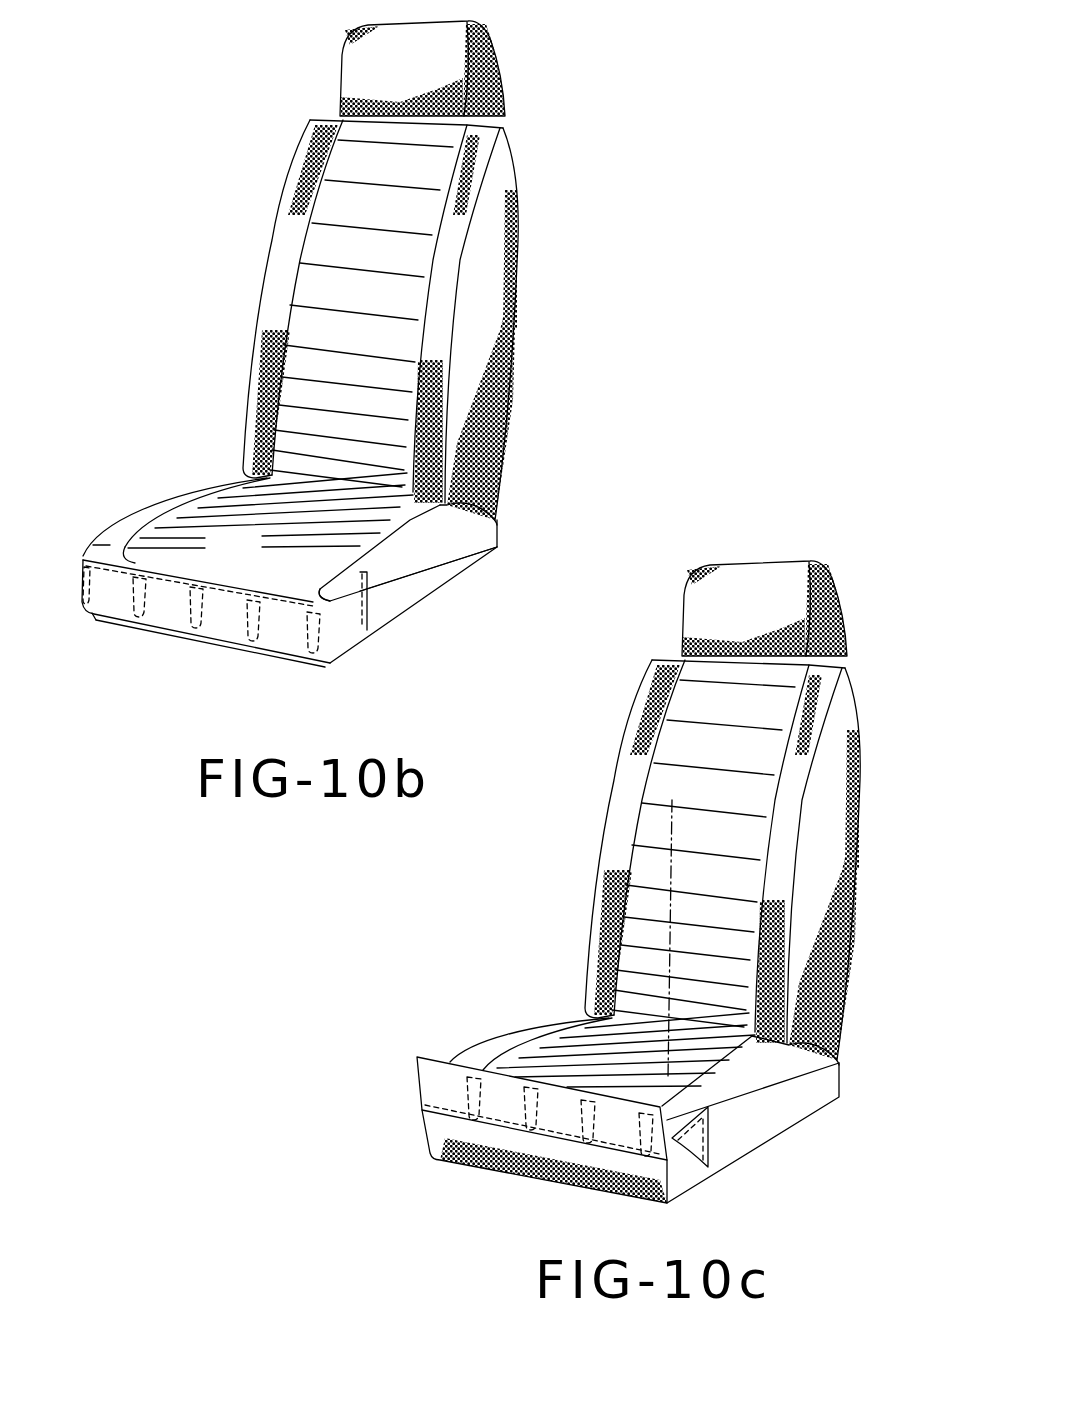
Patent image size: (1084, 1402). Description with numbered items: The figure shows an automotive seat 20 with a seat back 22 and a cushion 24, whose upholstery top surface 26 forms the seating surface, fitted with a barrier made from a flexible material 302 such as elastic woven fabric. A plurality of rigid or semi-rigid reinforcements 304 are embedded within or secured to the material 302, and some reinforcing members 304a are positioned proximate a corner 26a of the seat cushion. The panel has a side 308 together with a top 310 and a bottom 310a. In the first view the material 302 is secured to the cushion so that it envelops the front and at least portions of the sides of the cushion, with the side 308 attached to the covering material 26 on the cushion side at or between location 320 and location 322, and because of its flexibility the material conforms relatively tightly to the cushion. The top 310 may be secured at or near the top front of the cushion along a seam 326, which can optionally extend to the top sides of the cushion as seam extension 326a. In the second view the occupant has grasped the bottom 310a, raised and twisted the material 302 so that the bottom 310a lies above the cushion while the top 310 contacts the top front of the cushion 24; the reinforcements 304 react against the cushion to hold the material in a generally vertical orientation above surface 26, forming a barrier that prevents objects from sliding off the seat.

In FIG. 10B, the automotive seat 20 is at (252, 180).
In FIG. 10C, the automotive seat 20 is at (648, 622).
In FIG. 10B, the seat back 22 is at (320, 296).
In FIG. 10C, the seat back 22 is at (660, 826).
In FIG. 10B, the cushion 24 is at (168, 482).
In FIG. 10C, the cushion 24 is at (512, 1024).
In FIG. 10B, the top surface 26 is at (205, 514).
In FIG. 10C, the top surface 26 is at (545, 1052).
In FIG. 10B, the corner 26a is at (88, 556).
In FIG. 10B, the flexible material 302 is at (145, 562).
In FIG. 10C, the flexible material 302 is at (455, 1050).
In FIG. 10B, the reinforcements 304 is at (140, 622).
In FIG. 10C, the reinforcements 304 is at (468, 1110).
In FIG. 10B, the reinforcing members 304a is at (78, 568).
In FIG. 10C, the reinforcing members 304a is at (416, 1082).
In FIG. 10B, the side 308 is at (358, 630).
In FIG. 10C, the side 308 is at (695, 1143).
In FIG. 10B, the top 310 is at (222, 588).
In FIG. 10C, the top 310 is at (527, 1080).
In FIG. 10B, the bottom 310a is at (213, 637).
In FIG. 10C, the bottom 310a is at (645, 1097).
In FIG. 10B, the location 320 is at (375, 572).
In FIG. 10B, the location 322 is at (358, 630).
In FIG. 10B, the seam 326 is at (120, 572).
In FIG. 10B, the seam extension 326a is at (366, 572).